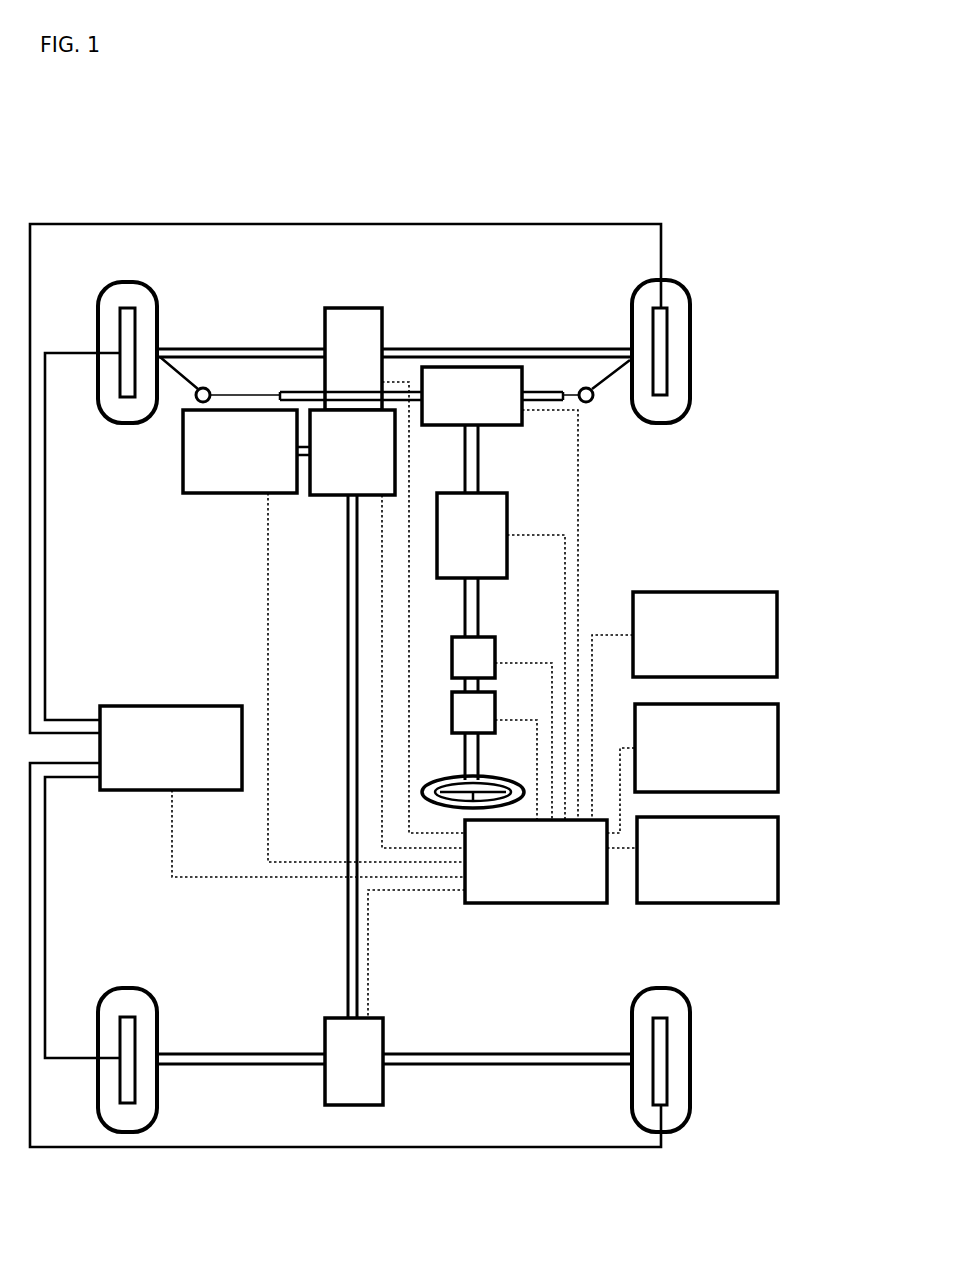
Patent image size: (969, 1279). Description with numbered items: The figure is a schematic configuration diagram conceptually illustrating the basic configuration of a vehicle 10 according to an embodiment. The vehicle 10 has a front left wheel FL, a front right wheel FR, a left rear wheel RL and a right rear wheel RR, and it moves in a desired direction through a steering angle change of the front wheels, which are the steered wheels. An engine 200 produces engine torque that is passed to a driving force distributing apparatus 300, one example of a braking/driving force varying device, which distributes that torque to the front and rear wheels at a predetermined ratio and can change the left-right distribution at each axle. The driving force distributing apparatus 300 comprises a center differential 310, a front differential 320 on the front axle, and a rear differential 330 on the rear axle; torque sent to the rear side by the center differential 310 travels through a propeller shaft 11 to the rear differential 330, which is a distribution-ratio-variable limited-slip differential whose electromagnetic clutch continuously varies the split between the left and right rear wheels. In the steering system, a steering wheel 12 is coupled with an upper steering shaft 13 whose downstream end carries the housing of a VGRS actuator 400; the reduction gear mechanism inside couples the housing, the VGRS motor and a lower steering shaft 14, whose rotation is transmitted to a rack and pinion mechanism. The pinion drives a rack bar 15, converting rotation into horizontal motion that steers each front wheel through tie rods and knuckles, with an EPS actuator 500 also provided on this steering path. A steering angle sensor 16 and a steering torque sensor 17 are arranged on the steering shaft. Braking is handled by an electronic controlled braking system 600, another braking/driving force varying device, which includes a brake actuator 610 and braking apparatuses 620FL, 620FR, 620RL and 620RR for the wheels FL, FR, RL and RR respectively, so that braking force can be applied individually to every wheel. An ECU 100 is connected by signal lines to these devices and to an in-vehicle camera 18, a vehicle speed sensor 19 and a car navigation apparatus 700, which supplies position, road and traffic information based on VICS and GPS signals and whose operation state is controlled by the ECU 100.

The vehicle 10 is at (706, 164).
The propeller shaft 11 is at (346, 724).
The steering wheel 12 is at (498, 778).
The upper steering shaft 13 is at (472, 604).
The lower steering shaft 14 is at (470, 468).
The rack bar 15 is at (282, 391).
The steering angle sensor 16 is at (473, 657).
The steering torque sensor 17 is at (473, 712).
The in-vehicle camera 18 is at (778, 704).
The vehicle speed sensor 19 is at (777, 592).
The ECU 100 is at (465, 904).
The engine 200 is at (184, 494).
The driving force distributing apparatus 300 is at (394, 673).
The center differential apparatus 310 is at (346, 452).
The front differential apparatus 320 is at (394, 359).
The rear differential apparatus 330 is at (394, 1061).
The VGRS actuator 400 is at (507, 519).
The EPS actuator 500 is at (522, 426).
The electronic controlled braking system (ECB) 600 is at (180, 635).
The brake actuator 610 is at (157, 706).
The braking apparatus 620FL is at (129, 308).
The braking apparatus 620FR is at (667, 340).
The braking apparatus 620RL is at (133, 1017).
The braking apparatus 620RR is at (657, 1018).
The car navigation apparatus 700 is at (778, 817).
The front left wheel FL is at (98, 308).
The front right wheel FR is at (686, 283).
The left rear wheel RL is at (122, 988).
The right rear wheel RR is at (668, 988).